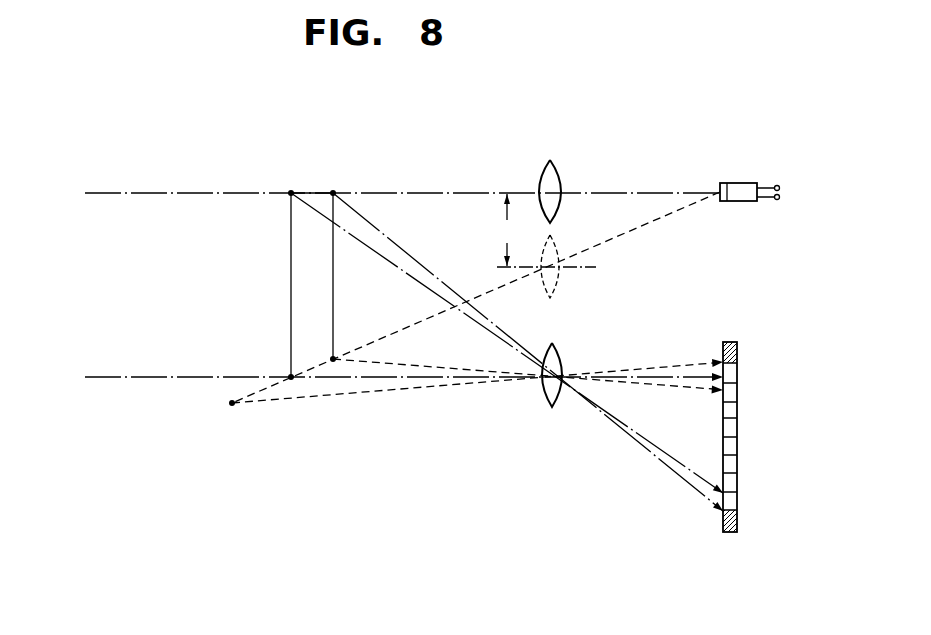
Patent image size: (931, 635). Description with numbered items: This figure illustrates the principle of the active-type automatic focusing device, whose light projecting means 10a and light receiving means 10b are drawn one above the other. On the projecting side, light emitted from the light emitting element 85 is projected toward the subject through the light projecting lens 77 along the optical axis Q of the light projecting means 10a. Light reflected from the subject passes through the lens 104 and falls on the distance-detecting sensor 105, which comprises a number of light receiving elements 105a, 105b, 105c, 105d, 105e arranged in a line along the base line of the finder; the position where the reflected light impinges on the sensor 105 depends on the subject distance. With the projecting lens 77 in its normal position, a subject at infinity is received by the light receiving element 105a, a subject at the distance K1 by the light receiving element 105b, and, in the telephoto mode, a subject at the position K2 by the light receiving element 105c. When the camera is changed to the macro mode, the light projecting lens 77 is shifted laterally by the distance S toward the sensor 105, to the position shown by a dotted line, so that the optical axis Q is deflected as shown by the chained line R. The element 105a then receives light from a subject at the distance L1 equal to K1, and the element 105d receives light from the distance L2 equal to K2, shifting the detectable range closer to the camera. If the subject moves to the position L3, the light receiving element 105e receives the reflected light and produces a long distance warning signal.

The light projecting means 10a is at (658, 148).
The light receiving means 10b is at (683, 457).
The light projecting lens 77 is at (548, 160).
The light emitting element 85 is at (750, 157).
The lens 104 is at (553, 408).
The distance-detecting sensor 105 is at (724, 440).
The light receiving element 105a is at (737, 372).
The light receiving element 105b is at (737, 500).
The light receiving element 105c is at (737, 520).
The light receiving element 105d is at (737, 390).
The light receiving element 105e is at (737, 351).
The optical axis of the light projecting means Q is at (207, 196).
The chained line R is at (265, 389).
The distance S is at (546, 246).
The distance K1 is at (290, 184).
The position K2 is at (334, 184).
The distance L1 is at (294, 374).
The distance L2 is at (340, 356).
The position L3 is at (233, 414).